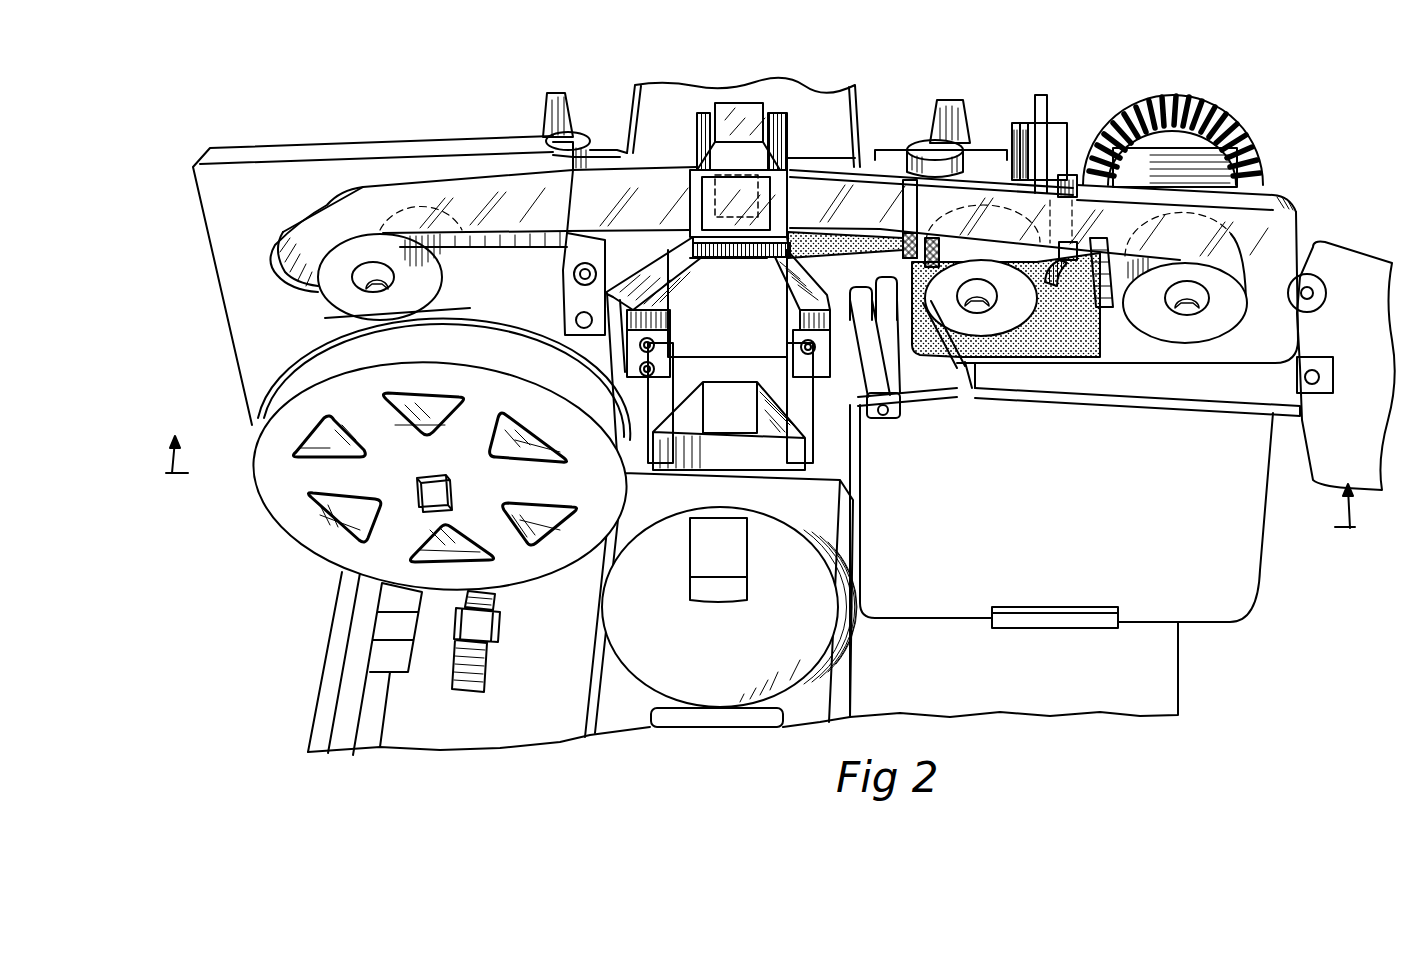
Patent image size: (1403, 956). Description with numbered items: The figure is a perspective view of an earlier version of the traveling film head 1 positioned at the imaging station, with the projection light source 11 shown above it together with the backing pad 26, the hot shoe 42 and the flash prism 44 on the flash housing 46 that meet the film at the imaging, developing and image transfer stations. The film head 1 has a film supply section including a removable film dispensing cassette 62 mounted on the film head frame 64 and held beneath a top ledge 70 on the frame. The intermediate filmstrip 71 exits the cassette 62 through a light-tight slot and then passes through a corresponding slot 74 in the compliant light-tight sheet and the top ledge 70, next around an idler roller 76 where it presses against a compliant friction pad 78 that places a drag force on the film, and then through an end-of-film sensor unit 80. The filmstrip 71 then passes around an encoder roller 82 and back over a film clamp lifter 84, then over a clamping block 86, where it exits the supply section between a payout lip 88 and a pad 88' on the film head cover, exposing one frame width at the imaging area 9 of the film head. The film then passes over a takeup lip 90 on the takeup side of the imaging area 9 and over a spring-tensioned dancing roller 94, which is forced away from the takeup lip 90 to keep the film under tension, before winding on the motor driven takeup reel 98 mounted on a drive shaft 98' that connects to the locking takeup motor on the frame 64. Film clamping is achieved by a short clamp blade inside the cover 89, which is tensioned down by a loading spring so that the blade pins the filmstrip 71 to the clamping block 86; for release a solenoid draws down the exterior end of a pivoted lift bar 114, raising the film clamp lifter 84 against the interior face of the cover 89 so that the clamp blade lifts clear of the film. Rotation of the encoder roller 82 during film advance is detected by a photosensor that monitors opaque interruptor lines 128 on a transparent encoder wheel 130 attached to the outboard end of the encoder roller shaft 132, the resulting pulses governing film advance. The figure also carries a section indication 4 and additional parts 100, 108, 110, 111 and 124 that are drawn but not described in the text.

The film head 1 is at (247, 197).
The section line 4 is at (760, 480).
The imaging area 9 is at (713, 193).
The projection light source 11 is at (752, 102).
The backing pad 26 is at (740, 240).
The hot shoe 42 is at (716, 382).
The flash prism 44 is at (710, 518).
The flash housing 46 is at (726, 652).
The film dispensing cassette 62 is at (1081, 497).
The film head frame 64 is at (265, 147).
The top ledge 70 is at (1128, 392).
The intermediate filmstrip 71 is at (1121, 321).
The slot 74 is at (971, 381).
The idler roller 76 is at (992, 262).
The compliant friction pad 78 is at (916, 360).
The end-of-film sensor unit 80 is at (1120, 286).
The encoder roller 82 is at (1220, 332).
The film clamp lifter 84 is at (1037, 295).
The clamping block 86 is at (909, 236).
The payout lip 88 is at (788, 290).
The pad 88' is at (791, 339).
The cover 89 is at (1343, 248).
The takeup lip 90 is at (676, 263).
The dancing roller 94 is at (443, 273).
The takeup reel 98 is at (440, 500).
The drive shaft 98' is at (450, 474).
The hinge bracket 100 is at (1315, 298).
The lever 108 is at (869, 290).
The guide 110 is at (878, 418).
The bracket 111 is at (899, 408).
The pivoted lift bar 114 is at (1046, 95).
The post 124 is at (931, 268).
The opaque interruptor lines 128 is at (1246, 130).
The transparent encoder wheel 130 is at (1187, 96).
The encoder roller shaft 132 is at (1201, 301).